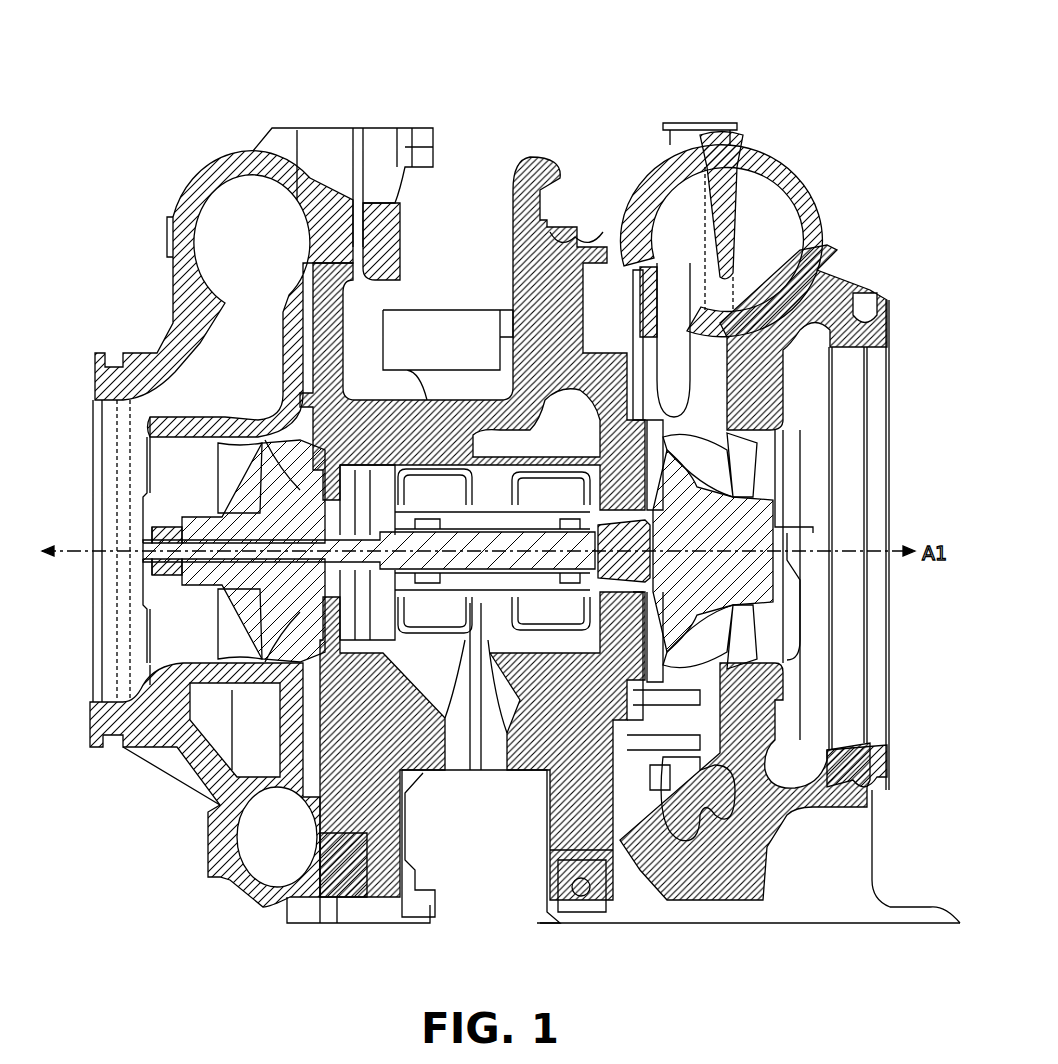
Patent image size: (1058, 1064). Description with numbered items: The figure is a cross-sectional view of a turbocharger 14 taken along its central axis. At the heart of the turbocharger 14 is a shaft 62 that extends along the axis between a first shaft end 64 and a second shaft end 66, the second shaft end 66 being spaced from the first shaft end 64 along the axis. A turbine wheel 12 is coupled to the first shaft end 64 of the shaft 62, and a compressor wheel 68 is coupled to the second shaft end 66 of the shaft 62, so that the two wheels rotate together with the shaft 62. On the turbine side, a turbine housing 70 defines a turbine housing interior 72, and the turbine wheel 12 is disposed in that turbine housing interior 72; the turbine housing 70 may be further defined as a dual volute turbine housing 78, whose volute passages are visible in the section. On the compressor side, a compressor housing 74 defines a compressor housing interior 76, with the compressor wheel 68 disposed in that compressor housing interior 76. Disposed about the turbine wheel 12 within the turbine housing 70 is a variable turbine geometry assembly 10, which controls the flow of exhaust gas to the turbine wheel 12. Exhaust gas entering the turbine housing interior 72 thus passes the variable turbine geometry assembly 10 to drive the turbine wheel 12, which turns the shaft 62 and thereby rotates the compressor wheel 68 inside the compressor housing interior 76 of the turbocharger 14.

The variable turbine geometry assembly 10 is at (676, 335).
The turbine wheel 12 is at (730, 530).
The turbocharger 14 is at (182, 98).
The shaft 62 is at (487, 548).
The first shaft end 64 is at (604, 440).
The second shaft end 66 is at (147, 551).
The compressor wheel 68 is at (262, 513).
The turbine housing 70 is at (867, 564).
The turbine housing interior 72 is at (768, 226).
The compressor housing 74 is at (172, 300).
The compressor housing interior 76 is at (256, 253).
The dual volute turbine housing 78 is at (823, 275).